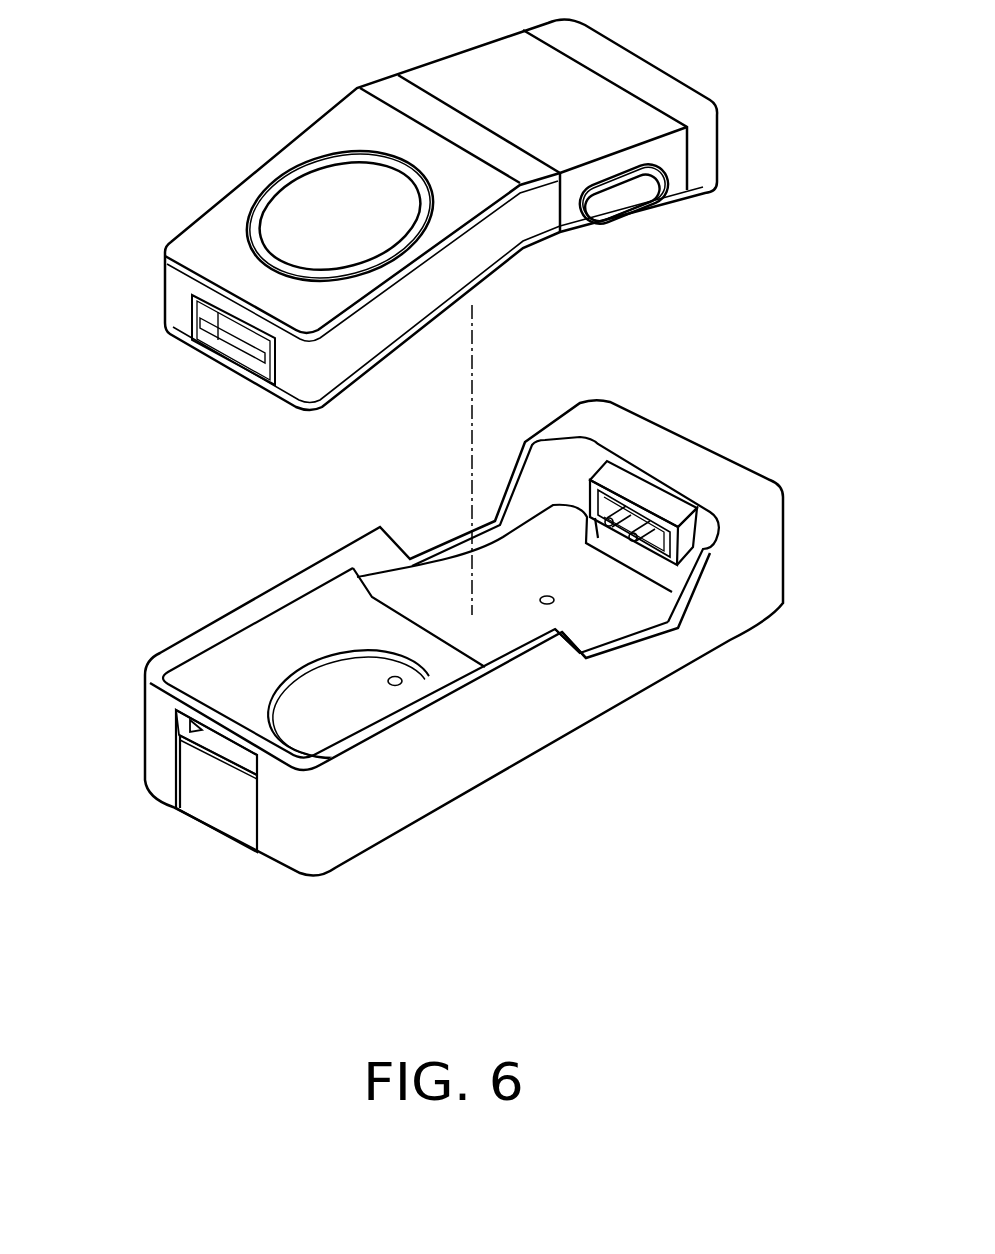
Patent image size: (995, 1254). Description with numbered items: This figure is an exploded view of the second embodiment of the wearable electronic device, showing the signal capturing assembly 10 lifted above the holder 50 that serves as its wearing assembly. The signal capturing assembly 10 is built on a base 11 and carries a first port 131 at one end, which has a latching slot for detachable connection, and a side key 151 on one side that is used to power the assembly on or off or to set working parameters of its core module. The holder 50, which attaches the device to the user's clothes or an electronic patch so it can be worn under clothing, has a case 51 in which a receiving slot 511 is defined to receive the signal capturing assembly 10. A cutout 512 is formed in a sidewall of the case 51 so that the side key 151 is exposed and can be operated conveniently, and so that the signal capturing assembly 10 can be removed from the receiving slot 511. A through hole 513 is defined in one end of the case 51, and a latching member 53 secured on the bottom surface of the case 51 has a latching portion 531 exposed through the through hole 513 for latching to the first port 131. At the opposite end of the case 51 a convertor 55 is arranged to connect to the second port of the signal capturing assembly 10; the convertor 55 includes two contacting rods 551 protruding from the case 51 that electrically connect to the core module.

The signal capturing assembly 10 is at (385, 88).
The base 11 is at (497, 273).
The first port 131 is at (248, 336).
The side key 151 is at (643, 197).
The holder 50 is at (713, 430).
The case 51 is at (423, 797).
The receiving slot 511 is at (367, 637).
The cutout 512 is at (608, 652).
The through hole 513 is at (195, 727).
The latching member 53 is at (208, 817).
The latching portion 531 is at (197, 771).
The convertor 55 is at (618, 484).
The contacting rod 551 is at (633, 541).